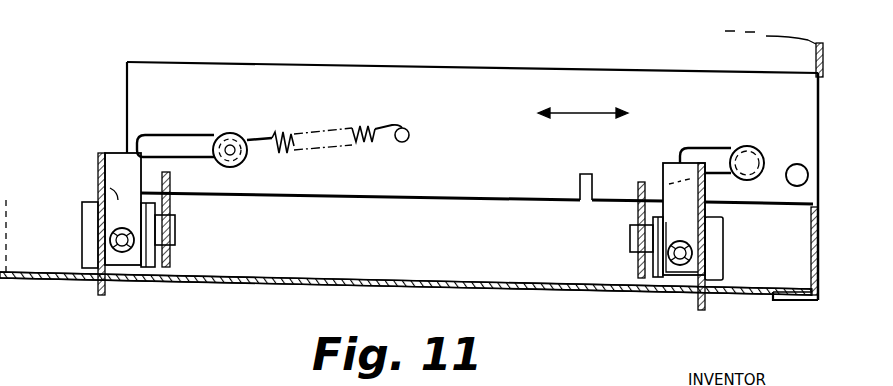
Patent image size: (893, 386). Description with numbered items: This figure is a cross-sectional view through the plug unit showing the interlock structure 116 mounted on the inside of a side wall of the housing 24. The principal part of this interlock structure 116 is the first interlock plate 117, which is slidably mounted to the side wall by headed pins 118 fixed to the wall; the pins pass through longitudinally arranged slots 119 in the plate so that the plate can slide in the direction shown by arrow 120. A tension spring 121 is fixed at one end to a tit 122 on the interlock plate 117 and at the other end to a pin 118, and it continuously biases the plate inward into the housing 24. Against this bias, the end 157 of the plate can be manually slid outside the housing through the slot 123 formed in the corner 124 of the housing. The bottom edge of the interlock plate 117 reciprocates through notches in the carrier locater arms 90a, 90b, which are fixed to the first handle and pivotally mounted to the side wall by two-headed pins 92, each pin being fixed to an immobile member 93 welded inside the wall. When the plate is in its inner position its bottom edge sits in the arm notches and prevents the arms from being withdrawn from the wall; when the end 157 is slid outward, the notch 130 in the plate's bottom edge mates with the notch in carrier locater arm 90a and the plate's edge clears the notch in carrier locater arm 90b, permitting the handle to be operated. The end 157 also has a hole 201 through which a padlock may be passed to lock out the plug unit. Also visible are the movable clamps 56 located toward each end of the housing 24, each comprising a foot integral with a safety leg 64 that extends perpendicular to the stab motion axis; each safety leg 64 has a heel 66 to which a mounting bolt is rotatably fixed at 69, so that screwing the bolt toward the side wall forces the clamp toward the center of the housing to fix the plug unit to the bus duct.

The housing 24 is at (23, 281).
The movable clamp 56 is at (96, 299).
The safety leg 64 is at (105, 152).
The heel 66 is at (117, 195).
The rotatable fixing 69 is at (125, 252).
The carrier locater arm 90a is at (642, 183).
The carrier locater arm 90b is at (170, 172).
The two-headed pin 92 is at (170, 231).
The immobile member 93 is at (167, 257).
The interlock structure 116 is at (421, 230).
The first interlock plate 117 is at (472, 107).
The headed pin 118 is at (233, 134).
The slot 119 is at (161, 134).
The arrow 120 is at (582, 110).
The tension spring 121 is at (288, 153).
The tit 122 is at (398, 142).
The slot 123 is at (823, 92).
The corner 124 is at (818, 276).
The notch 130 is at (579, 189).
The end 157 is at (816, 108).
The hole 201 is at (800, 164).